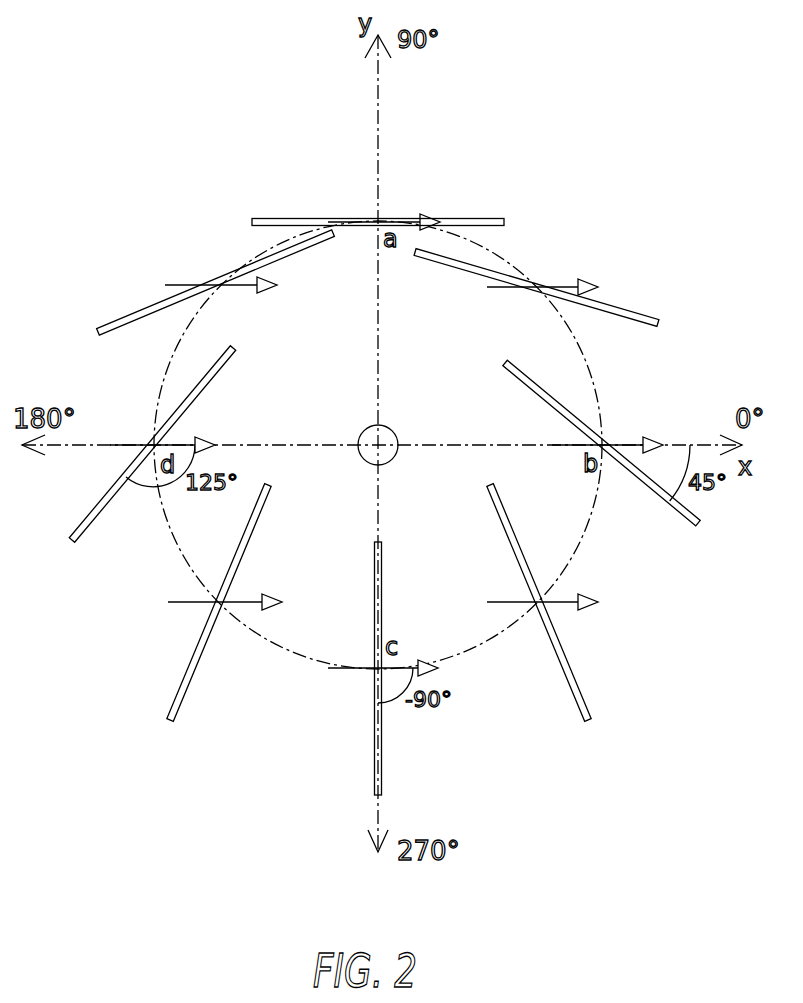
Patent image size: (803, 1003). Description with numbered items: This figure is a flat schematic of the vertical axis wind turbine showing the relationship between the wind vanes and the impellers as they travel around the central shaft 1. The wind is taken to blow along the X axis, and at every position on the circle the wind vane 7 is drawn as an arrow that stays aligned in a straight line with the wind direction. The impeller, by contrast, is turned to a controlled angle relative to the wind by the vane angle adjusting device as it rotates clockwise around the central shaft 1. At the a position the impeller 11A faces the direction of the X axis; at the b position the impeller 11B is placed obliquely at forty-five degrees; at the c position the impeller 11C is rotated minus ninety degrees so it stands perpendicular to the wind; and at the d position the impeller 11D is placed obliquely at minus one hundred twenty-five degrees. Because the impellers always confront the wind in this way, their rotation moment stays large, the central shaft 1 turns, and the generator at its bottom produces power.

The central shaft 1 is at (388, 430).
The wind vane 7 is at (422, 215).
The impeller at position a 11A is at (493, 218).
The impeller at position b 11B is at (698, 526).
The impeller at position c 11C is at (374, 725).
The impeller at position d 11D is at (74, 542).